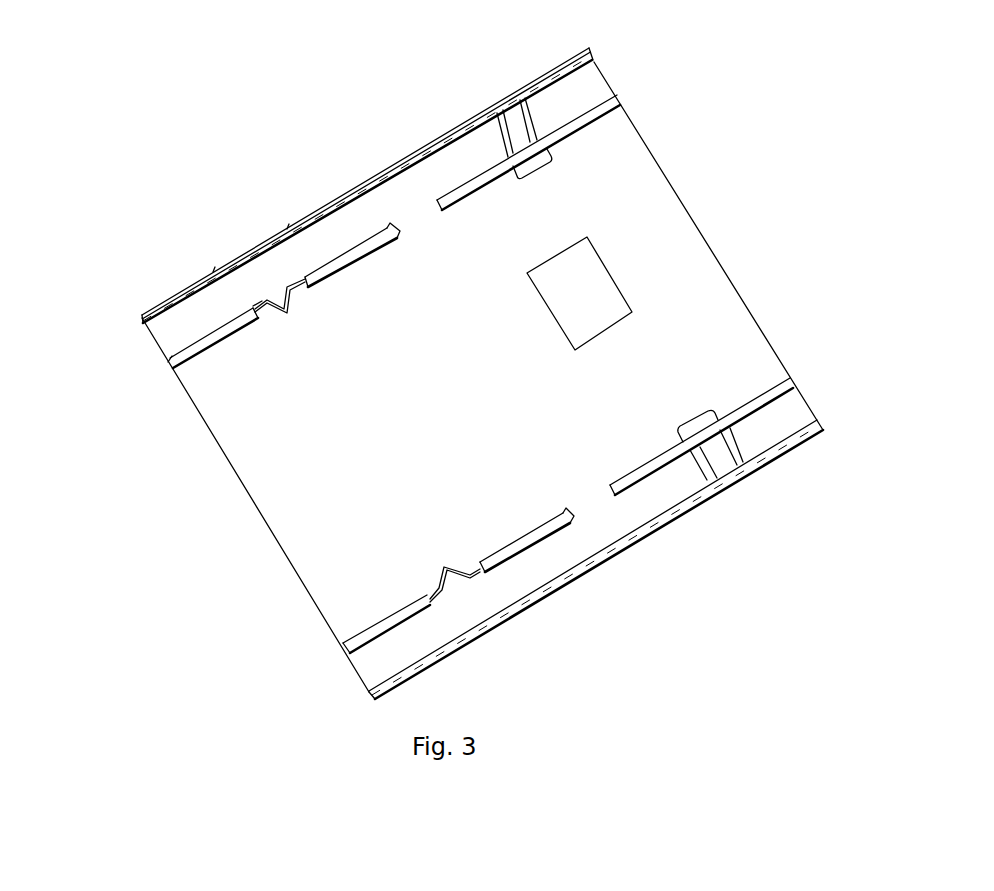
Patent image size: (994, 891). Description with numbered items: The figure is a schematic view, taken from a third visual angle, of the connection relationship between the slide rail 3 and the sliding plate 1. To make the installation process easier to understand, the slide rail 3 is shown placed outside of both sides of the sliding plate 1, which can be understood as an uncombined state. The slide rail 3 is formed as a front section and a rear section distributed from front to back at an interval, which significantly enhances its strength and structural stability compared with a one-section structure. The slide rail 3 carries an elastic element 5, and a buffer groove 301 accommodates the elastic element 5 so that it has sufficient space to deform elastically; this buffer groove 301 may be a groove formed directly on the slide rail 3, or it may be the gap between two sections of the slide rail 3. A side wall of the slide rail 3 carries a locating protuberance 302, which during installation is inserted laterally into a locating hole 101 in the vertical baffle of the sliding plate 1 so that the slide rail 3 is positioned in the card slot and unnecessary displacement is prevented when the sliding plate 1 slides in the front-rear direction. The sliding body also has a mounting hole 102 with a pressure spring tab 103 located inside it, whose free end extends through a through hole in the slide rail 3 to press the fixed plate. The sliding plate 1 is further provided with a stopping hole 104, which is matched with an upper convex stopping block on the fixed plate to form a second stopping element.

The sliding plate 1 is at (607, 172).
The slide rail 3 is at (215, 340).
The elastic element 5 is at (292, 307).
The locating hole 101 is at (362, 188).
The mounting hole 102 is at (500, 135).
The pressure spring tab 103 is at (513, 130).
The stopping hole 104 is at (592, 308).
The buffer groove 301 is at (262, 312).
The locating protuberance 302 is at (389, 229).